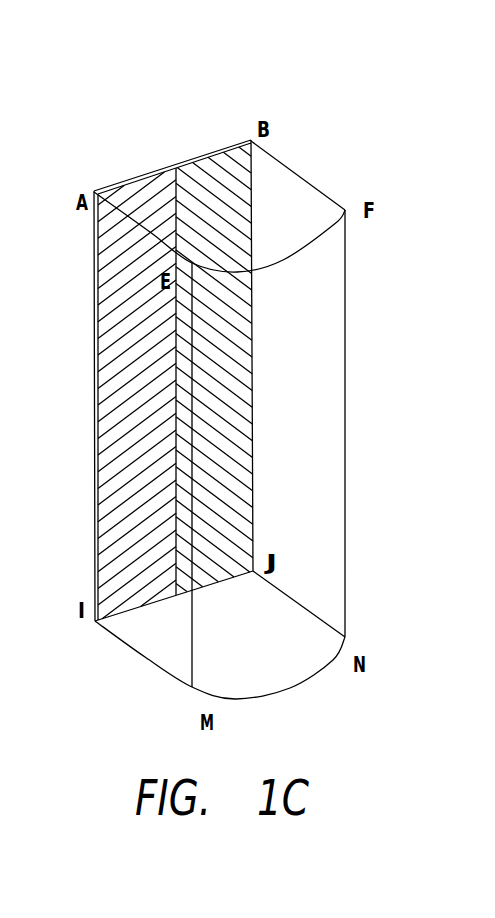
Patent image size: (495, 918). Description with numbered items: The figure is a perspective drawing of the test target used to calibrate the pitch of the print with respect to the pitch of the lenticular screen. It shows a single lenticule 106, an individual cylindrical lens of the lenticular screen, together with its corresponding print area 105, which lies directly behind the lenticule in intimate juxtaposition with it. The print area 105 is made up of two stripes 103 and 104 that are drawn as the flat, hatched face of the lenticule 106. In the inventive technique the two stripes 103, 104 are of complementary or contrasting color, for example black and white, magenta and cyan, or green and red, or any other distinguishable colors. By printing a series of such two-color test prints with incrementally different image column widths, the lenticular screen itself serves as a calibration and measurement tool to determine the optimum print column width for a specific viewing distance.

The stripe 103 is at (171, 161).
The stripe 104 is at (249, 143).
The print area 105 is at (232, 75).
The lenticule 106 is at (345, 424).